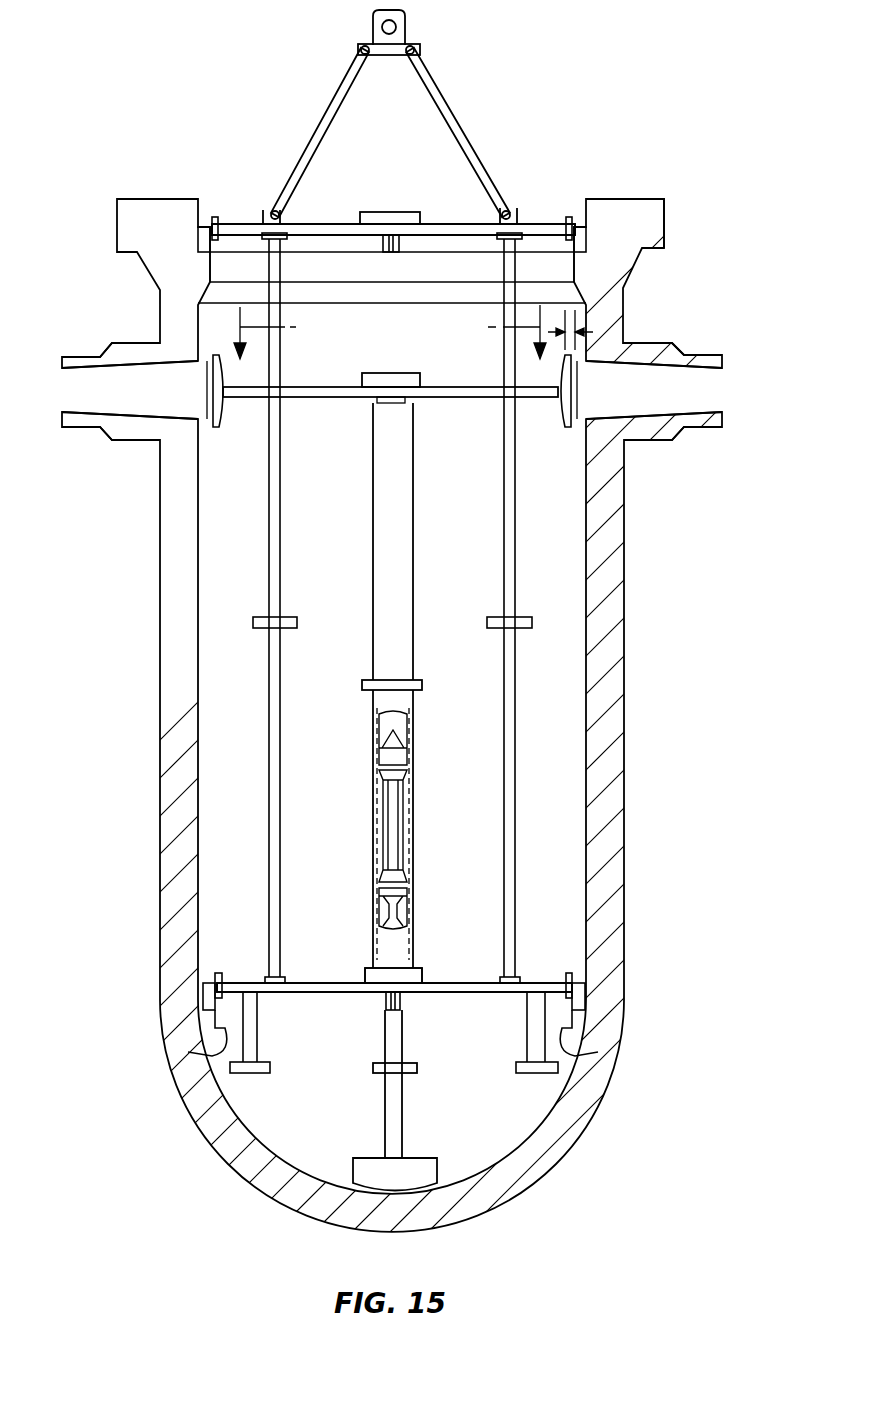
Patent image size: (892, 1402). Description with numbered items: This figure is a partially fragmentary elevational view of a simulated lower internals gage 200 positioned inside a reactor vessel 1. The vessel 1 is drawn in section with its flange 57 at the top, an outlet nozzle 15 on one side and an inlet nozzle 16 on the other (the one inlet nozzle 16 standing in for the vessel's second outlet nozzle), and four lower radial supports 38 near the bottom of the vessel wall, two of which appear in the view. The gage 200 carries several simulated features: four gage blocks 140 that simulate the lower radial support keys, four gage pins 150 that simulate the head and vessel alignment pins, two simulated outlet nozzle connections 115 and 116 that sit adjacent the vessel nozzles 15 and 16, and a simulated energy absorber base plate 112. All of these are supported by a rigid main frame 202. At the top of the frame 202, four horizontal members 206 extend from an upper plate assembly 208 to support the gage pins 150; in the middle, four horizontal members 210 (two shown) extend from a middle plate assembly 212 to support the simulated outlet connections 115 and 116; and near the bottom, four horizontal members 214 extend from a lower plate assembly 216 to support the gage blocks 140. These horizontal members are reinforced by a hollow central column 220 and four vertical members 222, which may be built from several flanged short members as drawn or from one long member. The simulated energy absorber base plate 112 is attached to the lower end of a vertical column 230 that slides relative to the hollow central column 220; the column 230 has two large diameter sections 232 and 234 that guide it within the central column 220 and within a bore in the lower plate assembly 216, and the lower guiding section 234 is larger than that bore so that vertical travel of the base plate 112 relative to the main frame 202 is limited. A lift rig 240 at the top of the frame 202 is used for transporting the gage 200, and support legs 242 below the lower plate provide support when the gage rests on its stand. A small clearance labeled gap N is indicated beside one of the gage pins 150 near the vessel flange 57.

The reactor vessel 1 is at (150, 712).
The outlet nozzle 15 is at (133, 445).
The inlet nozzle 16 is at (680, 441).
The lower radial support 38 is at (205, 1034).
The vessel flange 57 is at (665, 207).
The simulated energy absorber base plate 112 is at (425, 1158).
The simulated outlet nozzle connection 115 is at (222, 413).
The simulated outlet nozzle connection 116 is at (565, 416).
The gage block 140 is at (213, 974).
The gage pin 150 is at (213, 217).
The simulated lower internals gage 200 is at (252, 790).
The main frame 202 is at (345, 980).
The horizontal member 206 is at (327, 226).
The upper plate assembly 208 is at (401, 212).
The horizontal member 210 is at (318, 398).
The middle plate assembly 212 is at (392, 372).
The horizontal member 214 is at (455, 982).
The lower plate assembly 216 is at (392, 966).
The hollow central column 220 is at (413, 578).
The vertical member 222 is at (268, 578).
The vertical column 230 is at (385, 816).
The large diameter section 232 is at (393, 757).
The lower guiding section 234 is at (390, 889).
The lift rig 240 is at (443, 86).
The support leg 242 is at (270, 1062).
The gap N is at (598, 331).